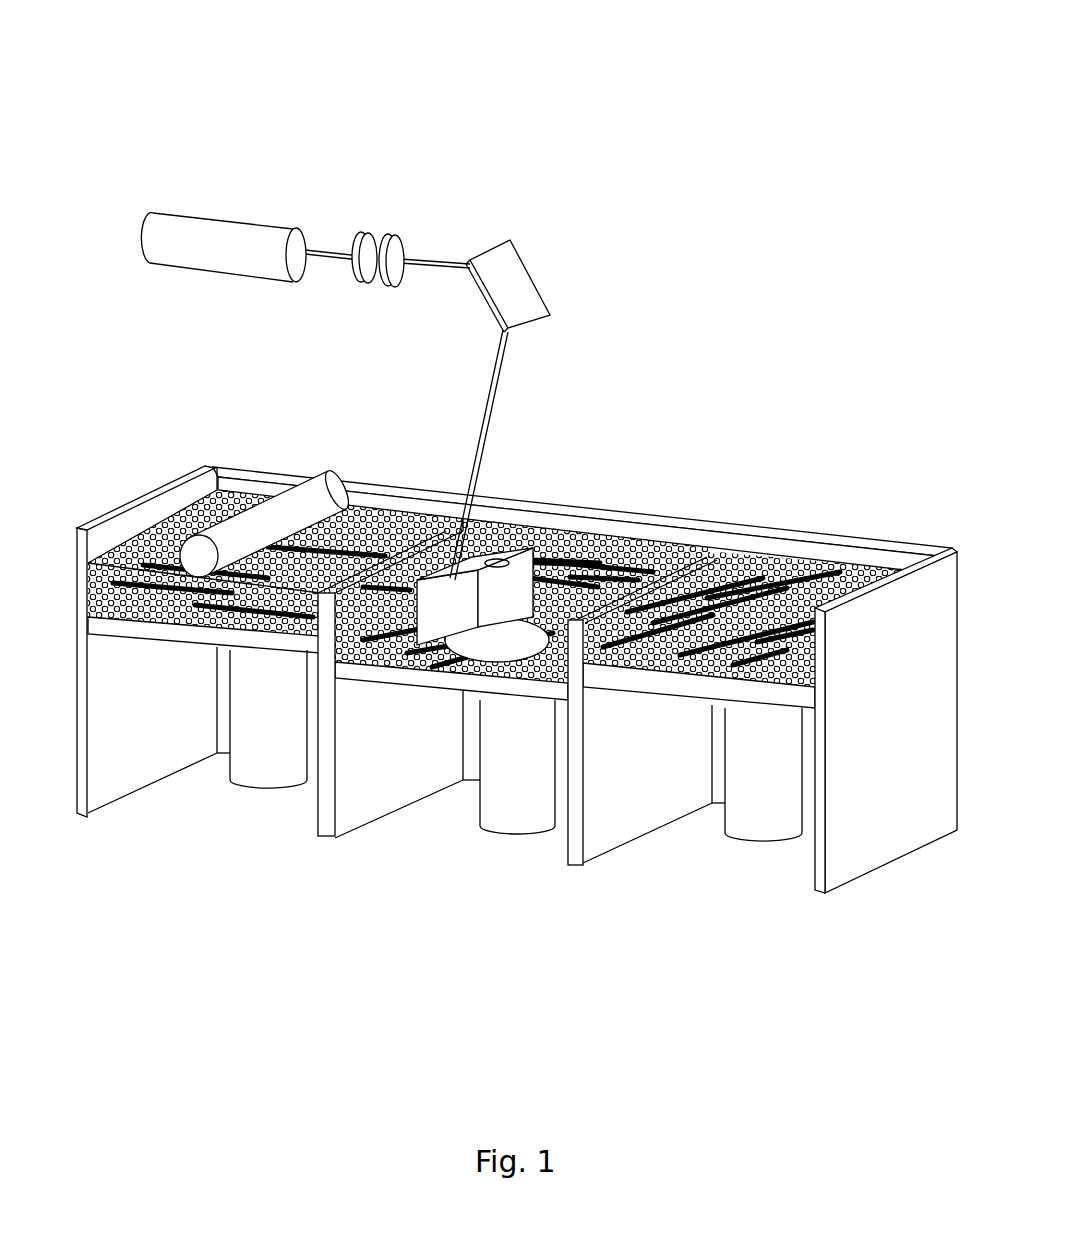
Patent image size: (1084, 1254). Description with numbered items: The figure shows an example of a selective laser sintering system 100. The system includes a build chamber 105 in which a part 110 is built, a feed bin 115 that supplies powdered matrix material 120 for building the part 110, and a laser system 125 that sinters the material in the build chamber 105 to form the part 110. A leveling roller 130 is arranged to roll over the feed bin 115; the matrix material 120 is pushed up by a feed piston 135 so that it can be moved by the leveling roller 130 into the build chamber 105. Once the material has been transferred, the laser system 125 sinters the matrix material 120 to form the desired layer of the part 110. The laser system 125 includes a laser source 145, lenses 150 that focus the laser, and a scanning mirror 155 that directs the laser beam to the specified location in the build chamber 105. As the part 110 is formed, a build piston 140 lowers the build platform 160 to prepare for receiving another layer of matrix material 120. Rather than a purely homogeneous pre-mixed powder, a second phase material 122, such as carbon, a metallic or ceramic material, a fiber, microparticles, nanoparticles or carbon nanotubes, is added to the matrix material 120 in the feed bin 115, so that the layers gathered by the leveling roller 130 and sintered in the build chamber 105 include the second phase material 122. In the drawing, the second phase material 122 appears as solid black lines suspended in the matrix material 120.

The selective laser sintering system 100 is at (750, 202).
The build chamber 105 is at (588, 540).
The part 110 is at (480, 550).
The feed bin 115 is at (800, 567).
The matrix material 120 is at (188, 498).
The second phase material 122 is at (620, 563).
The laser system 125 is at (312, 133).
The leveling roller 130 is at (300, 488).
The feed piston 135 is at (215, 770).
The build piston 140 is at (482, 810).
The laser source 145 is at (152, 214).
The lenses 150 is at (375, 242).
The scanning mirror 155 is at (522, 248).
The build platform 160 is at (452, 690).